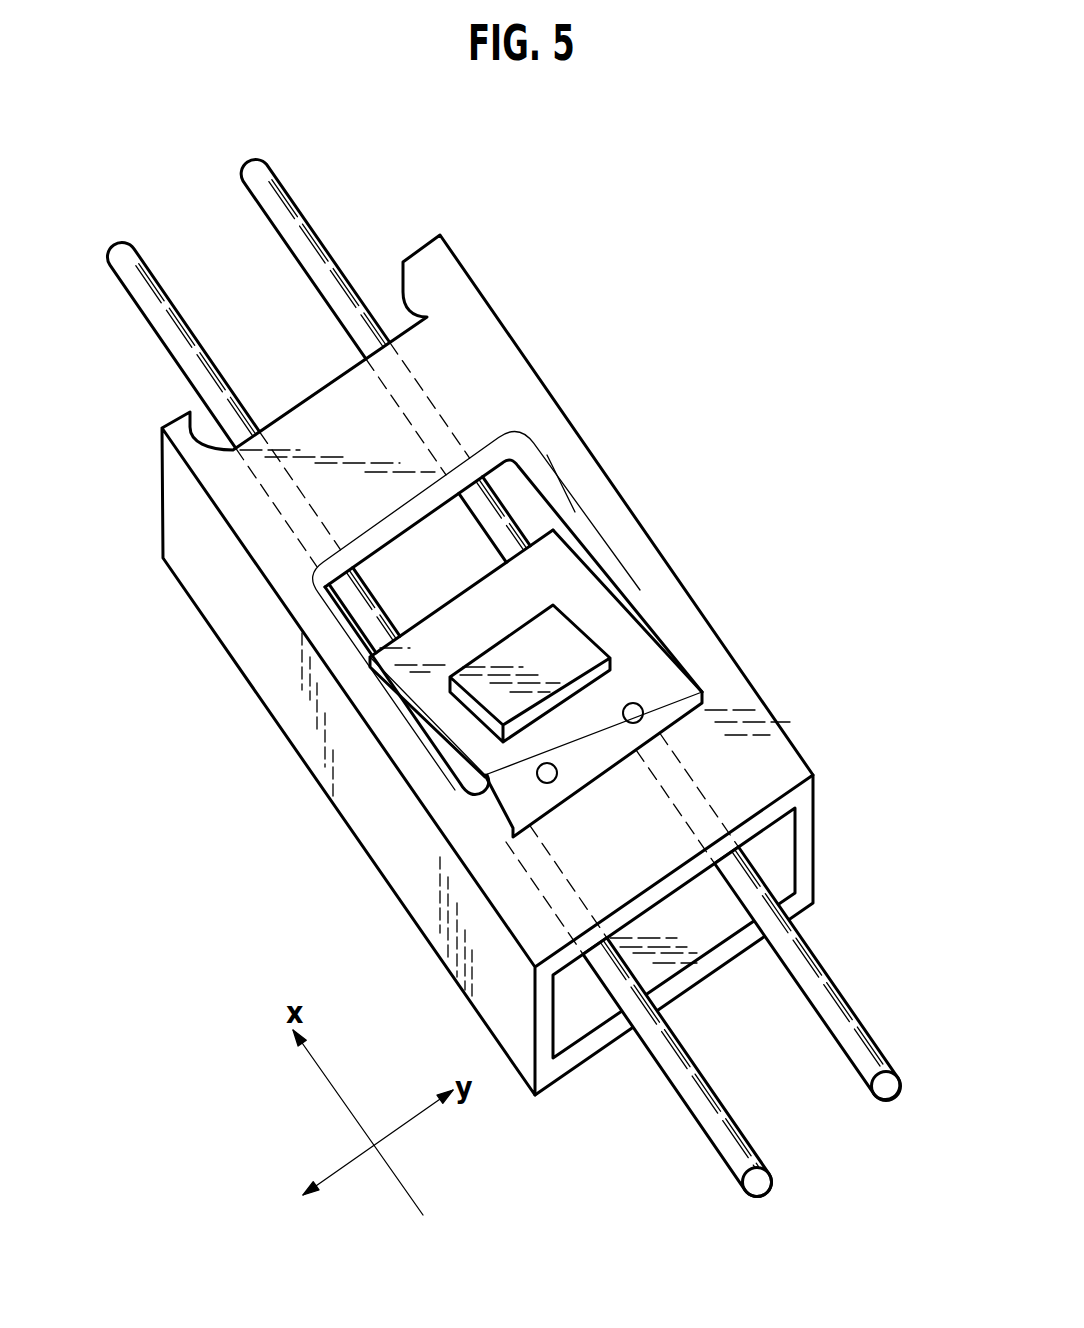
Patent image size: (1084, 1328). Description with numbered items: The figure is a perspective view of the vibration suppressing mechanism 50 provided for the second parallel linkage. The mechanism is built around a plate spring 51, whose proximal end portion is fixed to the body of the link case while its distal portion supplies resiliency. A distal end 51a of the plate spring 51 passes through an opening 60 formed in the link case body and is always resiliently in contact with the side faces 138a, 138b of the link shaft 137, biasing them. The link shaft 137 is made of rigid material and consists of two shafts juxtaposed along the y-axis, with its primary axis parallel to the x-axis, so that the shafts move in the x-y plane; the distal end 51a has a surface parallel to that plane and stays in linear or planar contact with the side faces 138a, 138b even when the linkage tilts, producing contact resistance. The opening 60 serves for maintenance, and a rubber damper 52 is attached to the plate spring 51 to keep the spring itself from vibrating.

The vibration suppressing mechanism 50 is at (611, 659).
The plate spring 51 is at (672, 666).
The distal end of the plate spring 51a is at (570, 553).
The damper 52 is at (568, 641).
The opening 60 is at (417, 543).
The link shaft 137 is at (886, 1098).
The side face of the link shaft 138a is at (363, 658).
The side face of the link shaft 138b is at (500, 507).